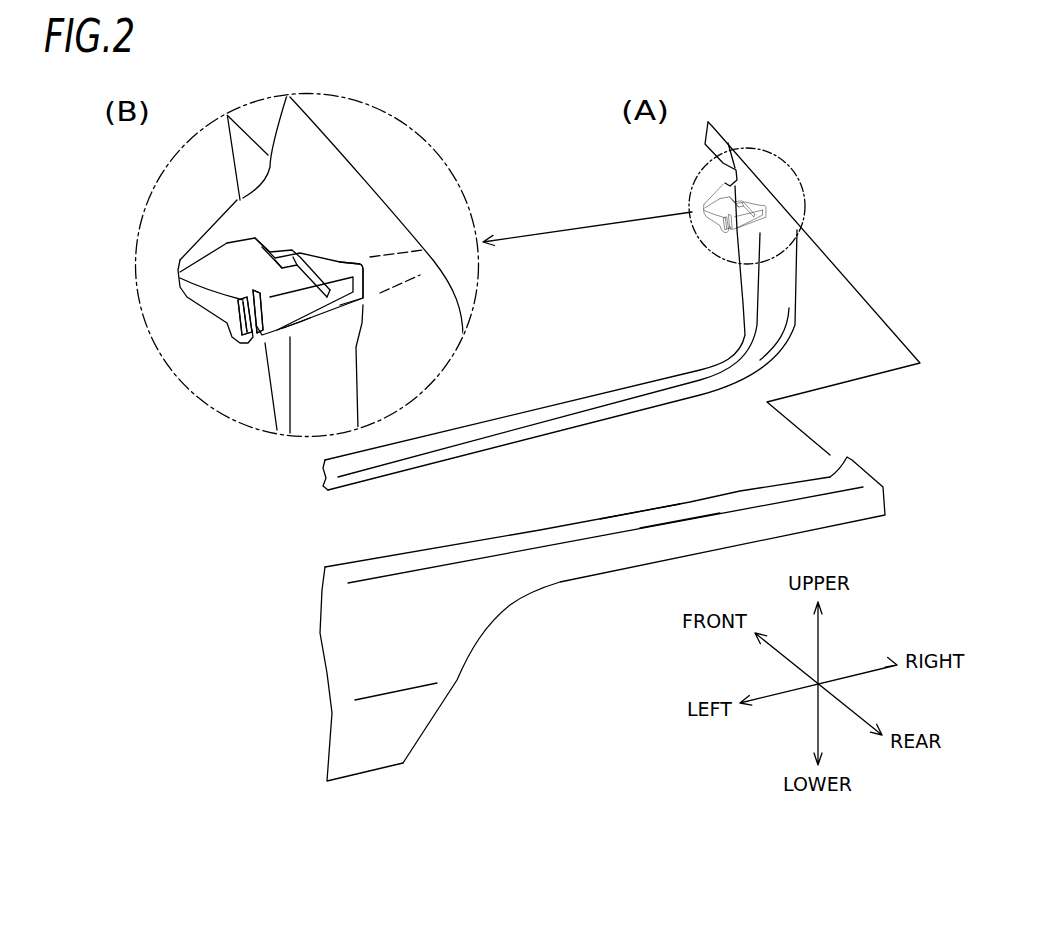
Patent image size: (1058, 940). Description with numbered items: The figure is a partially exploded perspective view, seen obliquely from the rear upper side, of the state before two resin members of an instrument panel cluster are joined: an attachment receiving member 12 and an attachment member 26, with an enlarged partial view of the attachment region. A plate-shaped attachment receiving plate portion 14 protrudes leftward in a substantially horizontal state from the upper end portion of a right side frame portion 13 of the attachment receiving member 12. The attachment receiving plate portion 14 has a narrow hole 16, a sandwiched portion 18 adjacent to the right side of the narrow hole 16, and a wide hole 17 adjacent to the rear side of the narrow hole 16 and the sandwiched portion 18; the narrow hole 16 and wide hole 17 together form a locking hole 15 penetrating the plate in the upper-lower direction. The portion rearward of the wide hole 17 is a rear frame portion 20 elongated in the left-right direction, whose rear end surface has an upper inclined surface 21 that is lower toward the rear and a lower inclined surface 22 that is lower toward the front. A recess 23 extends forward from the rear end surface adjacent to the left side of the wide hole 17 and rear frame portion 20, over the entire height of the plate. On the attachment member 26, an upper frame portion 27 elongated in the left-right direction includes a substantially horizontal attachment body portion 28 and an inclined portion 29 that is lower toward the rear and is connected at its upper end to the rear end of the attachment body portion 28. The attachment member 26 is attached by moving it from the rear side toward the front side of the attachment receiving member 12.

The attachment receiving member 12 is at (815, 336).
The right side frame portion 13 is at (445, 350).
The attachment receiving plate portion 14 is at (209, 248).
The locking hole 15 is at (95, 277).
The narrow hole 16 is at (250, 266).
The wide hole 17 is at (245, 300).
The sandwiched portion 18 is at (278, 240).
The rear frame portion 20 is at (314, 260).
The upper inclined surface 21 is at (349, 270).
The lower inclined surface 22 is at (305, 326).
The recess 23 is at (260, 333).
The attachment member 26 is at (346, 549).
The upper frame portion 27 is at (622, 458).
The attachment body portion 28 is at (645, 518).
The inclined portion 29 is at (704, 537).